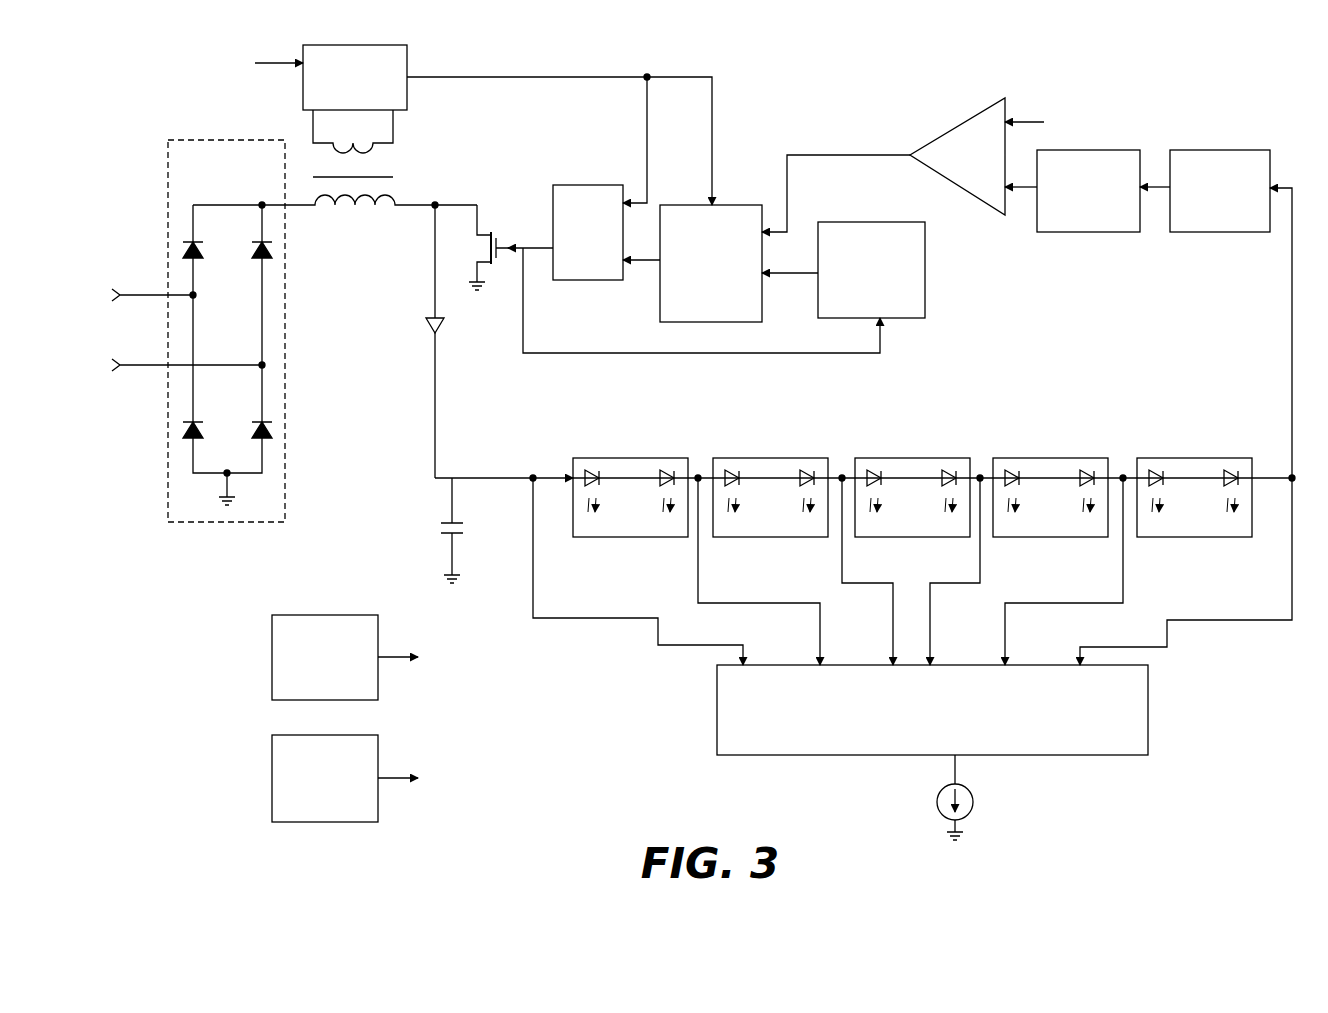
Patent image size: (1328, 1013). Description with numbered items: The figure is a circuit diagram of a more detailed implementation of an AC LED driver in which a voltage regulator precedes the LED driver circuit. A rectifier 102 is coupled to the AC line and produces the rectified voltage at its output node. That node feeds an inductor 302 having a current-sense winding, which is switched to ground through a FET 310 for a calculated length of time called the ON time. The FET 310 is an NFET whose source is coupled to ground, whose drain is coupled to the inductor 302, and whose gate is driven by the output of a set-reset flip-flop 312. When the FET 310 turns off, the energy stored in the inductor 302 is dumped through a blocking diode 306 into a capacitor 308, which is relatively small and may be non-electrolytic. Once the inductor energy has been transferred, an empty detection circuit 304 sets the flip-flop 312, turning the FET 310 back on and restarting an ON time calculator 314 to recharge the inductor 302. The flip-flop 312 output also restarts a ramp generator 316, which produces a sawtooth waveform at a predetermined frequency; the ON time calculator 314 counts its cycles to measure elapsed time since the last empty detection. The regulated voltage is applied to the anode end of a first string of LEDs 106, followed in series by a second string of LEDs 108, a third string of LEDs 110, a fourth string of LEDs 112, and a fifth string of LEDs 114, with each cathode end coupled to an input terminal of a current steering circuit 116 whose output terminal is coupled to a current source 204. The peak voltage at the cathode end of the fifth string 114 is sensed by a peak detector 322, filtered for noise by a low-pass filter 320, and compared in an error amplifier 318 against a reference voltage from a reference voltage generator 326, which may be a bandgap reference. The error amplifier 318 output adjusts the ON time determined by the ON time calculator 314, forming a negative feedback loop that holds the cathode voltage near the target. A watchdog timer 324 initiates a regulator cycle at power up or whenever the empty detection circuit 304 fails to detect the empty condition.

The rectifier 102 is at (221, 524).
The first string of LEDs 106 is at (632, 458).
The second string of LEDs 108 is at (777, 458).
The third string of LEDs 110 is at (910, 458).
The fourth string of LEDs 112 is at (1042, 458).
The fifth string of LEDs 114 is at (1182, 458).
The current steering circuit 116 is at (1148, 700).
The current source 204 is at (968, 820).
The inductor 302 is at (410, 160).
The empty detection circuit 304 is at (407, 50).
The blocking diode 306 is at (422, 338).
The capacitor 308 is at (460, 540).
The FET 310 is at (483, 224).
The flip-flop 312 is at (565, 185).
The ON time calculator 314 is at (727, 205).
The ramp generator 316 is at (925, 262).
The error amplifier 318 is at (950, 128).
The filter 320 is at (1068, 232).
The peak detector 322 is at (1208, 232).
The watchdog timer 324 is at (270, 668).
The reference voltage generator 326 is at (270, 785).